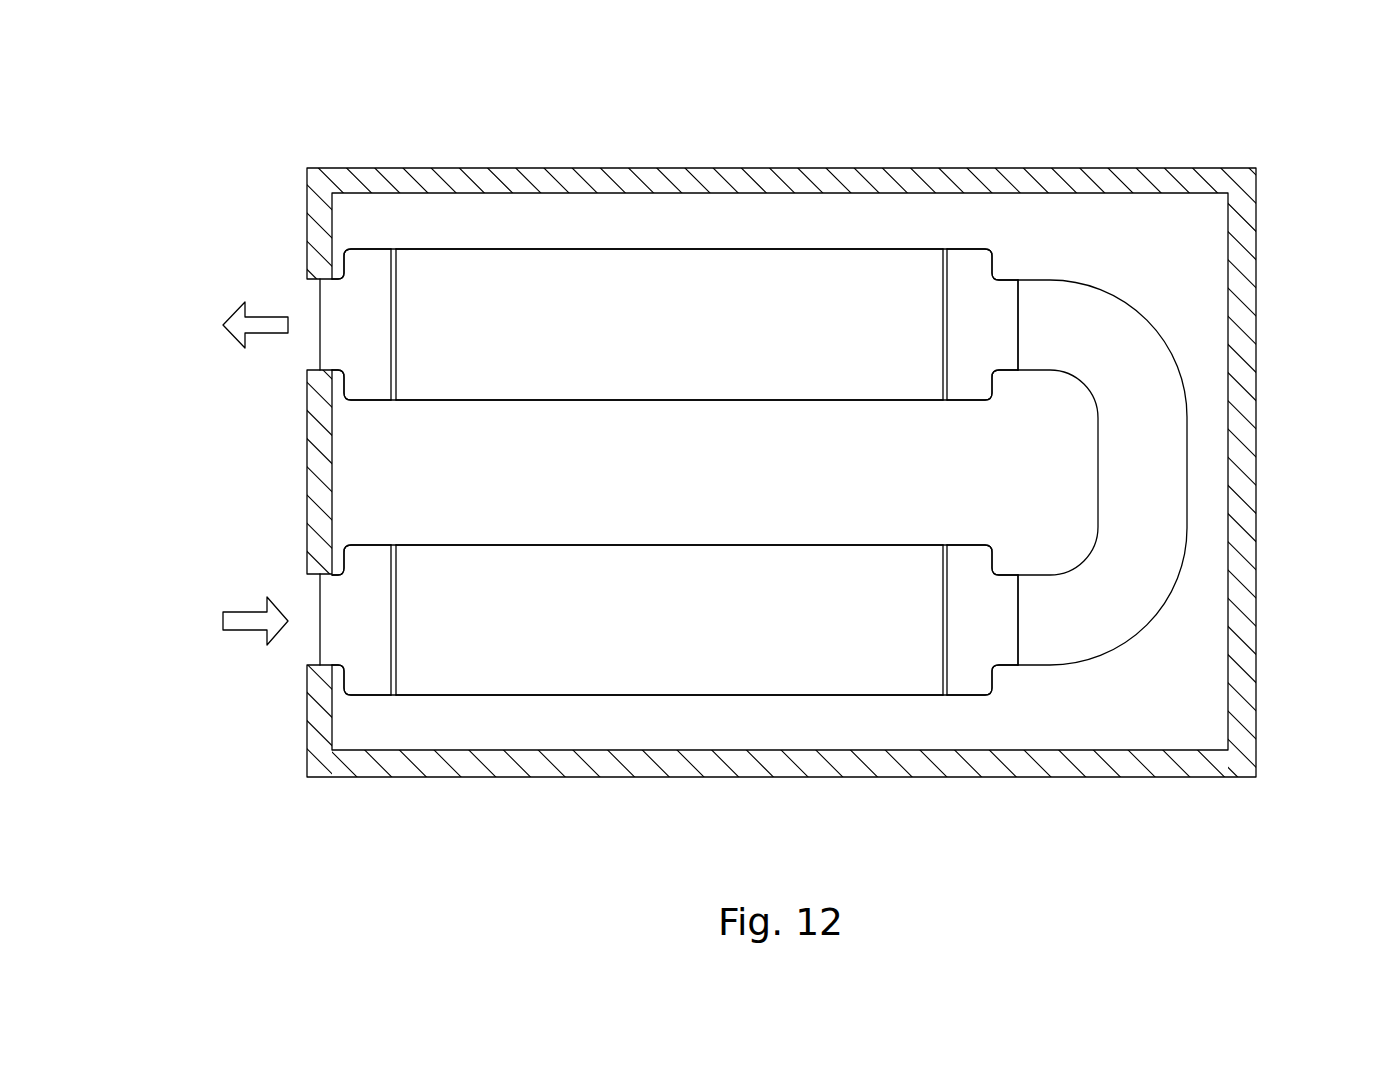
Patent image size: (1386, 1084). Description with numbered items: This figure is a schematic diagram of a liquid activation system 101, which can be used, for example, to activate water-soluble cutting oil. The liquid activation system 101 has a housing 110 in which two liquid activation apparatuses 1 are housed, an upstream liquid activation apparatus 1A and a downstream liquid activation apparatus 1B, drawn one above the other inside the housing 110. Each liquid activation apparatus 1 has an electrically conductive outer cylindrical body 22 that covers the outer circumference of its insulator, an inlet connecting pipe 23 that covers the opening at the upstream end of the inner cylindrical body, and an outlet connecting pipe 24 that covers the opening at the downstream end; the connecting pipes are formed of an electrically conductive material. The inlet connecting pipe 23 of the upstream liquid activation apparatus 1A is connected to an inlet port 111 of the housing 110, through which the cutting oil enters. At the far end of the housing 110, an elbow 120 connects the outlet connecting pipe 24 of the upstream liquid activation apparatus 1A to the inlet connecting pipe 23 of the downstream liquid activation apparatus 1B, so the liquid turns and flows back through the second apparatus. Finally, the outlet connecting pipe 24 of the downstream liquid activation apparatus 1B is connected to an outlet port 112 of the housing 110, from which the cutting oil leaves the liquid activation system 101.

The liquid activation apparatus 1 is at (675, 467).
The upstream liquid activation apparatus 1A is at (637, 230).
The downstream liquid activation apparatus 1B is at (604, 712).
The outer cylindrical body 22 is at (814, 262).
The inlet connecting pipe 23 is at (968, 262).
The outlet connecting pipe 24 is at (376, 262).
The liquid activation system 101 is at (693, 420).
The housing 110 is at (1048, 175).
The inlet port 111 is at (303, 590).
The outlet port 112 is at (300, 350).
The elbow 120 is at (1178, 468).